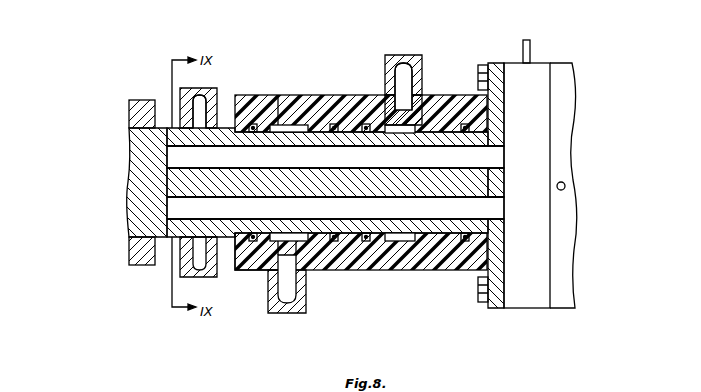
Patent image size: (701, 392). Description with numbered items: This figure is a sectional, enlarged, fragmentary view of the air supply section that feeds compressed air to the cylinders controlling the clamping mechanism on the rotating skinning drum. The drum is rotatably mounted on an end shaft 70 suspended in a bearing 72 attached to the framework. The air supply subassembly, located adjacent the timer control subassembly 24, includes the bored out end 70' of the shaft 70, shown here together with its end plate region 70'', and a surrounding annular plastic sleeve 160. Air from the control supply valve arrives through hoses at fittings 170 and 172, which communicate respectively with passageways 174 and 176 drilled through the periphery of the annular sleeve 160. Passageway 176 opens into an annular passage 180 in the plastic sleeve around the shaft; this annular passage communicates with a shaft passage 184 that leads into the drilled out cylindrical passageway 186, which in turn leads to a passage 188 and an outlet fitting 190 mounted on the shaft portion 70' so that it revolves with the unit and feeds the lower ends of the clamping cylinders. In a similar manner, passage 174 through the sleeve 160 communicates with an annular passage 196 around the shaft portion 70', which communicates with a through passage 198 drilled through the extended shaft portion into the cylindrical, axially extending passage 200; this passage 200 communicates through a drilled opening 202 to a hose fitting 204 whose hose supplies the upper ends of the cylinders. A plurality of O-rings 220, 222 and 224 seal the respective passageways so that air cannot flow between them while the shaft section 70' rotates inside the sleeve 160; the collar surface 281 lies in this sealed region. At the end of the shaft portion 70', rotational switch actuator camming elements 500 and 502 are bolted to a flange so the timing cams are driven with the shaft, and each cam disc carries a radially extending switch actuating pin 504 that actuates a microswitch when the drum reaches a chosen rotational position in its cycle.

The timer control subassembly 24 is at (572, 60).
The end shaft 70 is at (287, 167).
The bored out end of shaft 70' is at (345, 82).
The end plate 70'' is at (494, 206).
The bearing 72 is at (144, 100).
The annular plastic sleeve 160 is at (428, 262).
The fitting 170 is at (294, 310).
The fitting 172 is at (400, 55).
The passageway 174 is at (300, 250).
The passageway 176 is at (402, 80).
The annular passage 180 is at (393, 243).
The shaft passage 184 is at (423, 118).
The cylindrical passageway 186 is at (477, 165).
The passage 188 is at (217, 100).
The outlet fitting 190 is at (197, 122).
The annular passage 196 is at (283, 125).
The through passage 198 is at (258, 270).
The axially extending passage 200 is at (198, 213).
The drilled opening 202 is at (185, 223).
The hose fitting 204 is at (180, 273).
The O-ring 220 is at (464, 245).
The O-ring 222 is at (335, 243).
The O-ring 224 is at (240, 270).
The collar surface 281 is at (340, 68).
The rotational switch actuator camming element 500 is at (520, 300).
The rotational switch actuator camming element 502 is at (560, 296).
The switch actuating pin 504 is at (530, 45).